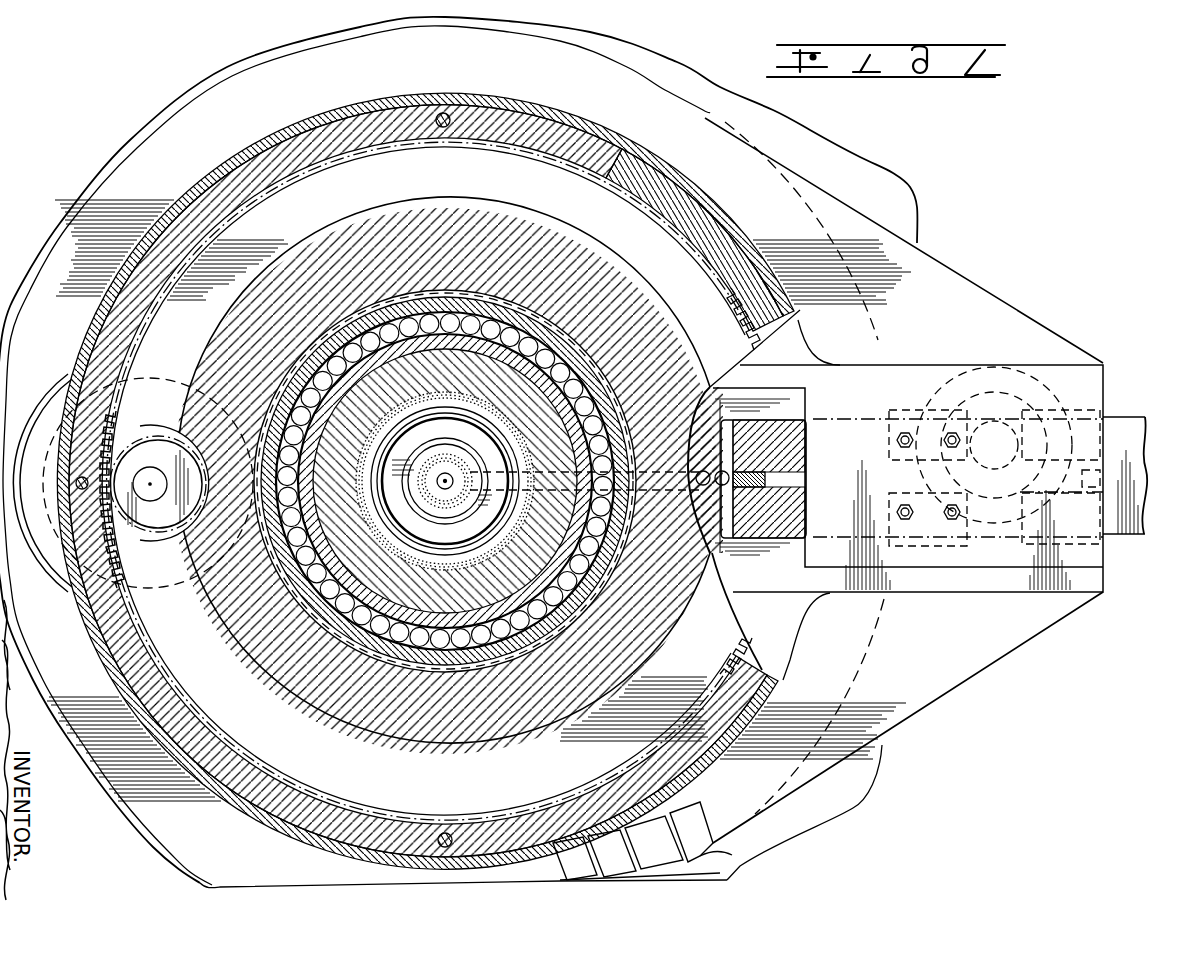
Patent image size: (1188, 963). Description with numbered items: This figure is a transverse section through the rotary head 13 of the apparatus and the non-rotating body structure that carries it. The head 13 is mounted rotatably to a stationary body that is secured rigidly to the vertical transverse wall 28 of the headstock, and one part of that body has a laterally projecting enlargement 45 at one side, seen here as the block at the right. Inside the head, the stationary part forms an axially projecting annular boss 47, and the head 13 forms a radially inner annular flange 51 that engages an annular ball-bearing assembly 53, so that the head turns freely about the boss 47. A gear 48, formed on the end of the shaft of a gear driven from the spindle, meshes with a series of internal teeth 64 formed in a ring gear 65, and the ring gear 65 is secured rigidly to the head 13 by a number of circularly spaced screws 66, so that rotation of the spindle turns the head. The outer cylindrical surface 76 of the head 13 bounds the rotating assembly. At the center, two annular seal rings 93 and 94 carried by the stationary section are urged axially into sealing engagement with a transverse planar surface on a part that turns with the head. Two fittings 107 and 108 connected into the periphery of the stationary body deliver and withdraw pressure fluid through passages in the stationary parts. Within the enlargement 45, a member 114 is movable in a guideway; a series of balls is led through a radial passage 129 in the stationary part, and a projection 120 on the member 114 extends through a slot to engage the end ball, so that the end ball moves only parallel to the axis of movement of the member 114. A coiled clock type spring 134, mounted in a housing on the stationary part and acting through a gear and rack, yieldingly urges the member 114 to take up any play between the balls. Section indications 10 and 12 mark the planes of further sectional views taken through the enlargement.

The section line 10- 10 is at (875, 444).
The section line 12- 12 is at (862, 333).
The rotary head 13 is at (642, 120).
The vertical transverse wall 28 is at (905, 198).
The laterally projecting enlargement 45 is at (960, 273).
The annular ring or boss 47 is at (578, 256).
The gear 48 is at (143, 436).
The annular flange 51 is at (582, 352).
The ball-bearing assembly 53 is at (645, 345).
The internal teeth 64 is at (112, 420).
The ring gear 65 is at (236, 165).
The screws 66 is at (443, 113).
The outer cylindrical surface 76 is at (553, 100).
The annular seal ring 93 is at (497, 421).
The annular seal ring 94 is at (440, 510).
The fitting 107 is at (705, 857).
The fitting 108 is at (545, 818).
The member 114 is at (1119, 540).
The projection 120 is at (753, 470).
The radial passage 129 is at (707, 395).
The coiled clock type spring 134 is at (1010, 385).